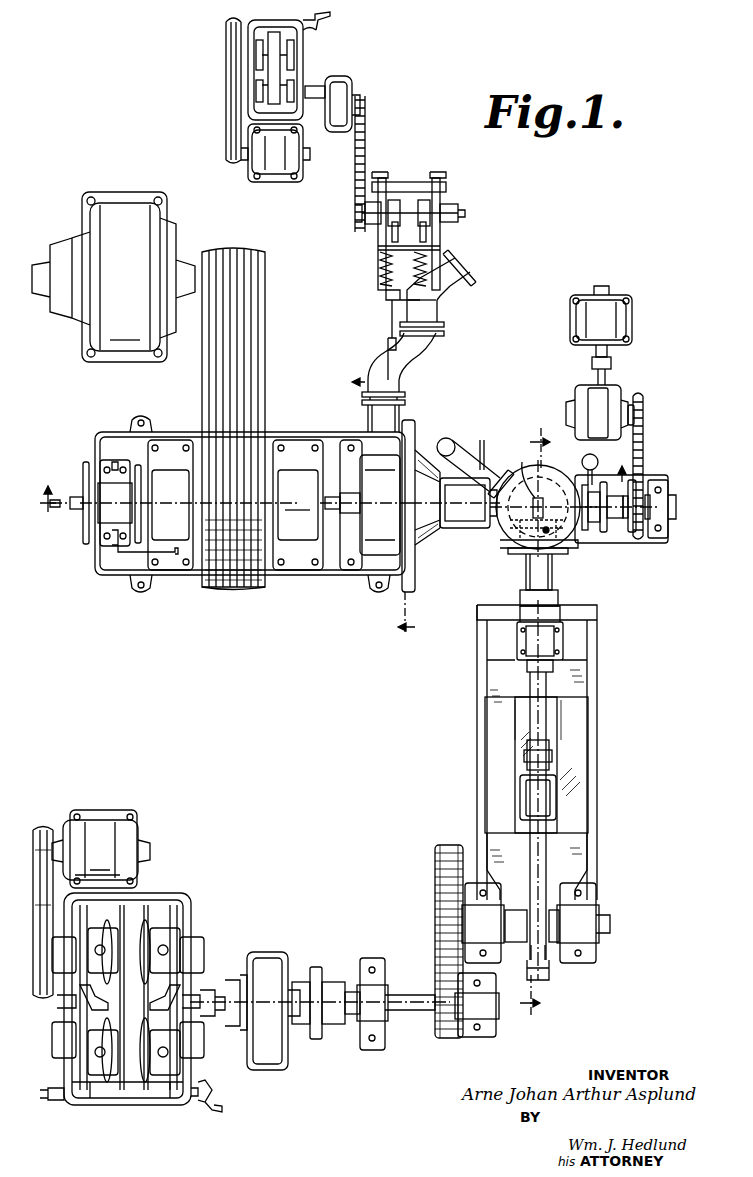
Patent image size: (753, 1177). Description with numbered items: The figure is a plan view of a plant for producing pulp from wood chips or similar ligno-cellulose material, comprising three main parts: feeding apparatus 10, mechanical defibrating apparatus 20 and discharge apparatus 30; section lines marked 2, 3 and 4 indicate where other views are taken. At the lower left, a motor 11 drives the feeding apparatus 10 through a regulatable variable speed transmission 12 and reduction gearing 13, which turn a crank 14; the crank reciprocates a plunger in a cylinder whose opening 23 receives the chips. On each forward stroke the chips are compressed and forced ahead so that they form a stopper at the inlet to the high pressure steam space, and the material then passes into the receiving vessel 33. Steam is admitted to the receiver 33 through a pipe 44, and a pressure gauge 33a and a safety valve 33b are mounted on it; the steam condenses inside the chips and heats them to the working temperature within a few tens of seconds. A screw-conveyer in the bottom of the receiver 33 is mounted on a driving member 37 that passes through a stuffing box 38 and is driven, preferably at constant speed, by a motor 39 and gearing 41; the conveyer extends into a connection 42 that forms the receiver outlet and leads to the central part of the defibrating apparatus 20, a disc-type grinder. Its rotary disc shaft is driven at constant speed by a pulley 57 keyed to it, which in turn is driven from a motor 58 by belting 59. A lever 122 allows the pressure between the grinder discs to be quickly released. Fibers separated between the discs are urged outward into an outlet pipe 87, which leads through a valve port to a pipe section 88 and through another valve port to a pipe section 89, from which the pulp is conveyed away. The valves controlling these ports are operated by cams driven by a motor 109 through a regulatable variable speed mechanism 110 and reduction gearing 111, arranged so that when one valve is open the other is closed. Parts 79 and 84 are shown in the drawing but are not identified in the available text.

The feeding apparatus 10 is at (580, 737).
The motor 11 is at (102, 822).
The regulatable variable speed transmission 12 is at (191, 916).
The reduction gearing 13 is at (432, 936).
The crank 14 is at (552, 972).
The mechanical defibrating apparatus 20 is at (372, 570).
The opening 23 is at (560, 636).
The discharge apparatus 30 is at (433, 310).
The receiving vessel 33 is at (513, 537).
The pressure gauge 33a is at (534, 498).
The safety valve 33b is at (548, 533).
The driving member 37 is at (633, 522).
The stuffing box 38 is at (603, 520).
The motor 39 is at (618, 318).
The gearing 41 is at (644, 470).
The connection 42 is at (466, 528).
The pipe 44 is at (458, 460).
The pulley 57 is at (268, 576).
The motor 58 is at (178, 222).
The belting 59 is at (258, 336).
The disc 79 is at (84, 472).
The bearing bracket 84 is at (142, 478).
The outlet pipe 87 is at (368, 414).
The pipe section 88 is at (426, 364).
The pipe section 89 is at (452, 288).
The motor 109 is at (278, 166).
The regulatable variable speed mechanism 110 is at (262, 80).
The reduction gearing 111 is at (338, 128).
The lever 122 is at (170, 555).
The section line 2 is at (538, 721).
The section line 3 is at (326, 481).
The section line 4 is at (374, 517).